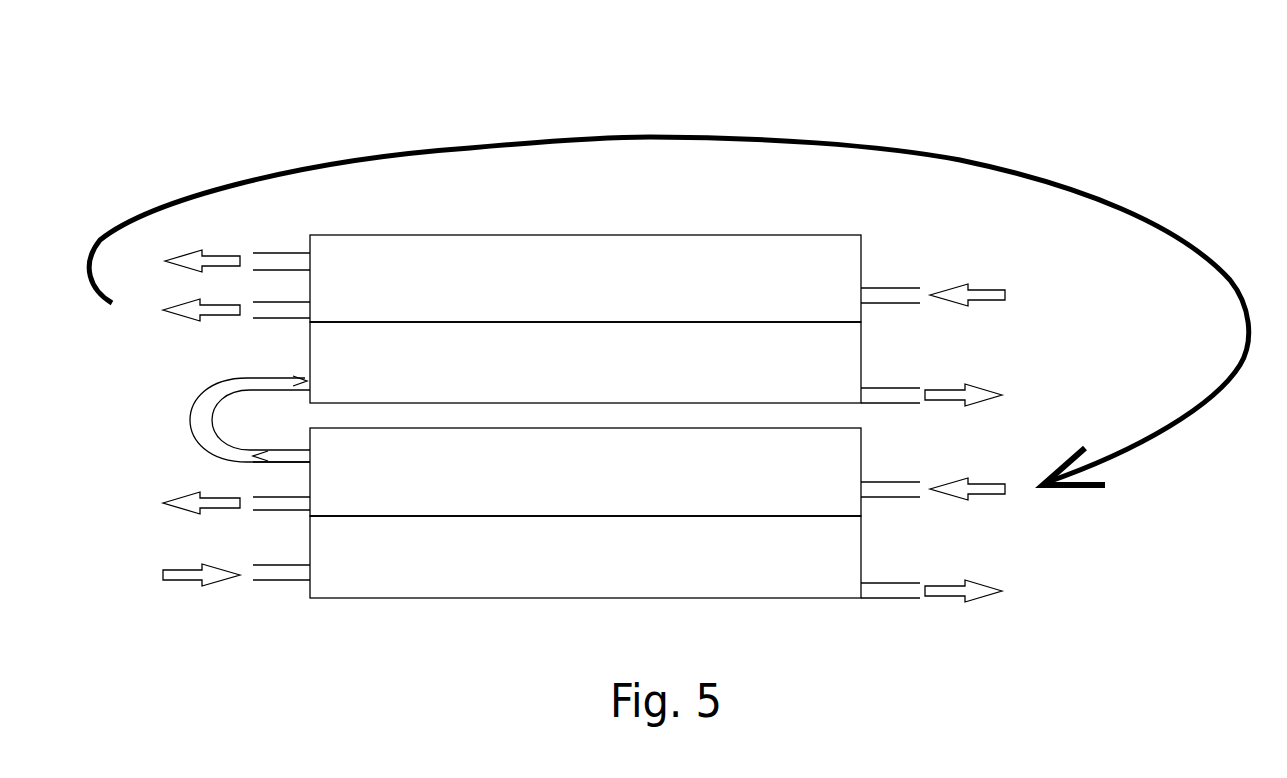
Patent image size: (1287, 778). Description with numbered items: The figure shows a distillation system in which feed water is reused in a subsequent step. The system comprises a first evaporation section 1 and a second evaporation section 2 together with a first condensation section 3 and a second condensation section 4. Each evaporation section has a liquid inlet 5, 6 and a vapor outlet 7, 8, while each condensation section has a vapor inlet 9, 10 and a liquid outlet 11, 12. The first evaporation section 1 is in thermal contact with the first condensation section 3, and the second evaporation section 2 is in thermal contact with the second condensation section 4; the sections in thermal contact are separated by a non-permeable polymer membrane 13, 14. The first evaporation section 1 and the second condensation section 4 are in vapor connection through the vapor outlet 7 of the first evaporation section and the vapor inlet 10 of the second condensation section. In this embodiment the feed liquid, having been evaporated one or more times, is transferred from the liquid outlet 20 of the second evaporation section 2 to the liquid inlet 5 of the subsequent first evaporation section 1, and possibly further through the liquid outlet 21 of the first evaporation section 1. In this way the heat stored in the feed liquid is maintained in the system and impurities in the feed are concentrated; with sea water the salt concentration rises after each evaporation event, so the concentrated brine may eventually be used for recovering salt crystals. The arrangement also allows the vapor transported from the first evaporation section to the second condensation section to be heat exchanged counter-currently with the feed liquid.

The first evaporation section 1 is at (588, 474).
The second evaporation section 2 is at (588, 289).
The first condensation section 3 is at (590, 567).
The second condensation section 4 is at (588, 370).
The liquid inlet 5 is at (905, 482).
The liquid inlet 6 is at (907, 292).
The vapor outlet 7 is at (290, 462).
The vapor outlet 8 is at (280, 262).
The vapor inlet 9 is at (302, 572).
The vapor inlet 10 is at (307, 378).
The liquid outlet 11 is at (898, 589).
The liquid outlet 12 is at (903, 393).
The non-permeable polymer membrane 13 is at (543, 516).
The non-permeable polymer membrane 14 is at (515, 322).
The liquid outlet 20 is at (267, 308).
The liquid outlet 21 is at (293, 503).